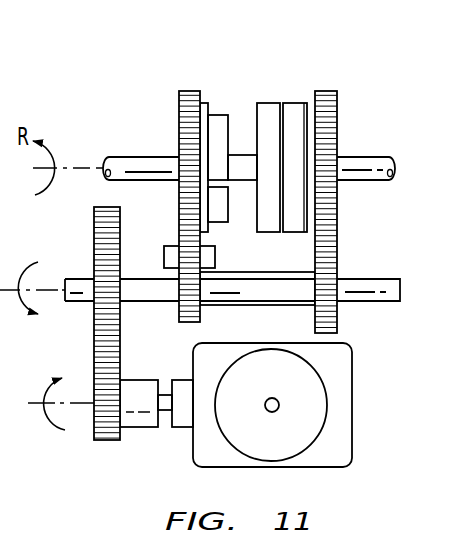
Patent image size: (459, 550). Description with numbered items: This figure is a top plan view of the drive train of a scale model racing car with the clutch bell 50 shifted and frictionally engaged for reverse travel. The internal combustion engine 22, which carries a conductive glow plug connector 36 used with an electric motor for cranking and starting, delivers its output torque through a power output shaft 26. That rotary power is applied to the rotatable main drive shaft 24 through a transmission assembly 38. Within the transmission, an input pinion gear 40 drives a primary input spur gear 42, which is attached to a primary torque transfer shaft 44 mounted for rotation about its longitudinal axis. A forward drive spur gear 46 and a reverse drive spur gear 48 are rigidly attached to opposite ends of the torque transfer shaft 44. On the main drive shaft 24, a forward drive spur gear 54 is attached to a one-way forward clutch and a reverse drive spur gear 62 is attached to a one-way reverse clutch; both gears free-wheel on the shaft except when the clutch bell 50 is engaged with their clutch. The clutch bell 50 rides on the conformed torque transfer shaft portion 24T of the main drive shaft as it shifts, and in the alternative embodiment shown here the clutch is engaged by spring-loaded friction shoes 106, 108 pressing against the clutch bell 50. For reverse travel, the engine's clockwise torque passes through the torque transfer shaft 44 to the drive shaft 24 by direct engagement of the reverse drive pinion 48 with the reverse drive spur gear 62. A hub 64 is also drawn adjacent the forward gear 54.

The engine 22 is at (350, 432).
The main drive shaft 24 is at (133, 157).
The torque transfer shaft portion 24T is at (243, 152).
The power output shaft 26 is at (167, 414).
The conductive glow plug connector 36 is at (279, 400).
The transmission assembly 38 is at (180, 57).
The input pinion gear 40 is at (93, 418).
The primary input spur gear 42 is at (93, 247).
The primary torque transfer shaft 44 is at (368, 302).
The forward drive spur gear 46 is at (200, 316).
The reverse drive spur gear 48 is at (338, 261).
The clutch bell 50 is at (292, 103).
The forward drive spur gear 54 is at (177, 118).
The reverse drive spur gear 62 is at (338, 110).
The hub 64 is at (178, 233).
The friction shoe 106 is at (220, 118).
The friction shoe 108 is at (225, 203).